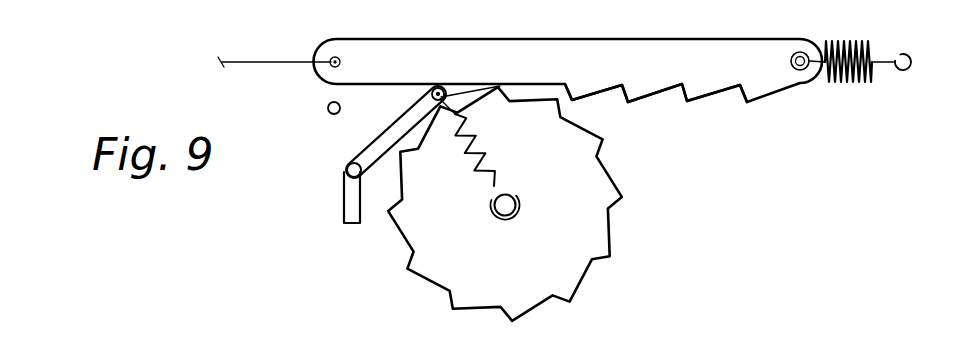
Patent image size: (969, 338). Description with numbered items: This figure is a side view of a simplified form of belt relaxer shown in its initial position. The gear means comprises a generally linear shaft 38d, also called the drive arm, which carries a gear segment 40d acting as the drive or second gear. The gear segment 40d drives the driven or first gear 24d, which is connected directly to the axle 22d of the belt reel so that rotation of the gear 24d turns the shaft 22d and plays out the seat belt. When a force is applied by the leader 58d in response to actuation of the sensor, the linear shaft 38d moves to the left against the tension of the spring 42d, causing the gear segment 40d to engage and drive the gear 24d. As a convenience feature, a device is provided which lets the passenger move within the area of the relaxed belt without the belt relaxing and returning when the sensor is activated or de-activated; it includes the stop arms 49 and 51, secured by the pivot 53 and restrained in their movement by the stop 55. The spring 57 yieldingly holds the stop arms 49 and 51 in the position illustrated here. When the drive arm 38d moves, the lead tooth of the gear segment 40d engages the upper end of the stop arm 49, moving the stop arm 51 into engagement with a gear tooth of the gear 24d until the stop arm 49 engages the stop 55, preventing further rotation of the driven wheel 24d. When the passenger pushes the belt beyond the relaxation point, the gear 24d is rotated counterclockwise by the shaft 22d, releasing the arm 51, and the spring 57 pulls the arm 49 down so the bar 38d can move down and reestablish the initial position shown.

The axle 22d is at (520, 198).
The driven gear 24d is at (585, 238).
The linear shaft 38d is at (478, 50).
The gear segment 40d is at (662, 90).
The spring 42d is at (842, 84).
The stop arm 49 is at (402, 117).
The stop arm 51 is at (343, 197).
The pivot 53 is at (346, 168).
The stop 55 is at (327, 107).
The spring 57 is at (476, 147).
The leader 58d is at (255, 62).